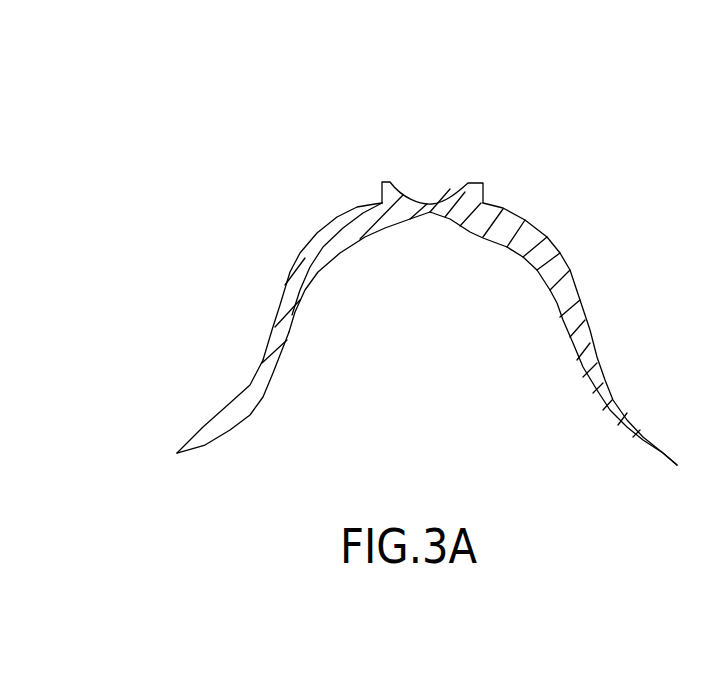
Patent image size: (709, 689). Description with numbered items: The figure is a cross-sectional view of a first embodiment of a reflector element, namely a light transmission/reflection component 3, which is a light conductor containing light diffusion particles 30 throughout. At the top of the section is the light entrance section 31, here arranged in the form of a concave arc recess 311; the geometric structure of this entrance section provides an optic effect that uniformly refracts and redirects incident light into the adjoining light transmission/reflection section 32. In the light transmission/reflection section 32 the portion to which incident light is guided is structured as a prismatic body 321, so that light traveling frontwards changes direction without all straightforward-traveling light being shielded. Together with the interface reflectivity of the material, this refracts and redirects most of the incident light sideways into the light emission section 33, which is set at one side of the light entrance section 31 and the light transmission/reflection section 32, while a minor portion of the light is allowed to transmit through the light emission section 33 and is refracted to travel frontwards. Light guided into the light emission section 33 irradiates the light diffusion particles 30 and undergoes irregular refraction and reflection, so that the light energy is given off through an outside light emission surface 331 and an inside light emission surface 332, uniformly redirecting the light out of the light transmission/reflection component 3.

The light transmission/reflection component 3 is at (360, 183).
The light diffusion particles 30 is at (308, 263).
The light entrance section 31 is at (428, 202).
The concave arc recess 311 is at (432, 197).
The light transmission/reflection section 32 is at (410, 219).
The prismatic body 321 is at (410, 219).
The light emission section 33 is at (281, 331).
The outside light emission surface 331 is at (248, 387).
The inside light emission surface 332 is at (263, 390).